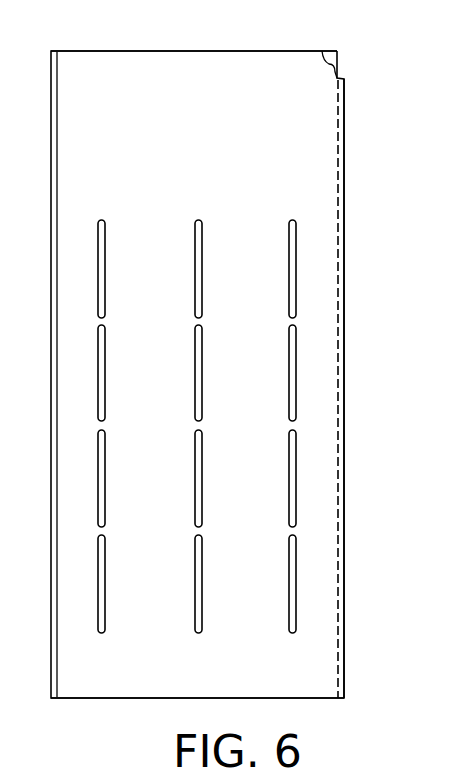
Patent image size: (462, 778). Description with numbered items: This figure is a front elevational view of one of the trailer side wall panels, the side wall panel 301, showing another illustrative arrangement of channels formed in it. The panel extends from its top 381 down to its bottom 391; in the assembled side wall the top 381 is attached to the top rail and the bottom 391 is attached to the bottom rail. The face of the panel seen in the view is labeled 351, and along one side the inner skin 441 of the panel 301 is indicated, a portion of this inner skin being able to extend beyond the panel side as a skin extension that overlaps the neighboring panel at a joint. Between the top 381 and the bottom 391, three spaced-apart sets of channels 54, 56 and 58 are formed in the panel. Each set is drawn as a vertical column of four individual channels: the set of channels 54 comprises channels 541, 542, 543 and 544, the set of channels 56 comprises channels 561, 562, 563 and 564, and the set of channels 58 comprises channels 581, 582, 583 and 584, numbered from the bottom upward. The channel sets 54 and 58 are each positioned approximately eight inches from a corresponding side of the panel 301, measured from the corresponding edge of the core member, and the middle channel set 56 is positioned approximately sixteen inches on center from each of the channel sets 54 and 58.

The side wall panel 301 is at (360, 56).
The top 381 is at (181, 50).
The front face 351 is at (220, 108).
The inner skin 441 is at (345, 137).
The bottom 391 is at (105, 699).
The set of channels 54 is at (105, 211).
The set of channels 56 is at (200, 211).
The set of channels 58 is at (294, 211).
The slot 541 is at (105, 575).
The slot 542 is at (105, 465).
The slot 543 is at (105, 355).
The slot 544 is at (105, 257).
The slot 561 is at (202, 575).
The slot 562 is at (202, 465).
The slot 563 is at (202, 355).
The slot 564 is at (202, 257).
The slot 581 is at (296, 605).
The slot 582 is at (296, 492).
The slot 583 is at (296, 375).
The slot 584 is at (296, 273).